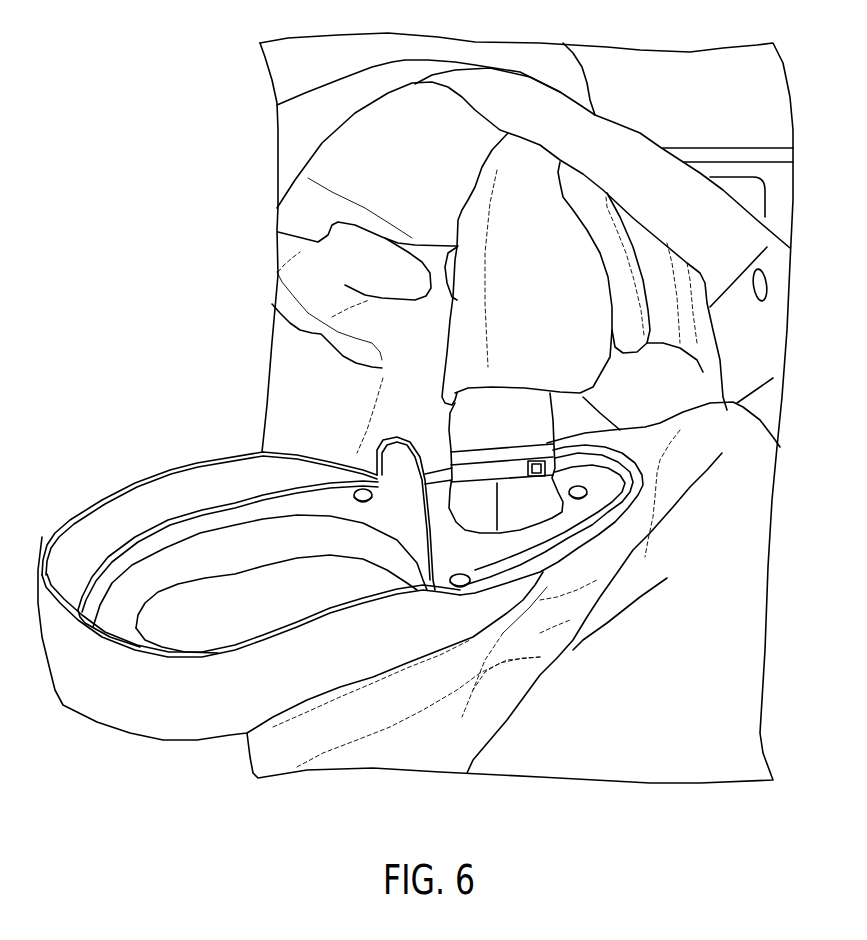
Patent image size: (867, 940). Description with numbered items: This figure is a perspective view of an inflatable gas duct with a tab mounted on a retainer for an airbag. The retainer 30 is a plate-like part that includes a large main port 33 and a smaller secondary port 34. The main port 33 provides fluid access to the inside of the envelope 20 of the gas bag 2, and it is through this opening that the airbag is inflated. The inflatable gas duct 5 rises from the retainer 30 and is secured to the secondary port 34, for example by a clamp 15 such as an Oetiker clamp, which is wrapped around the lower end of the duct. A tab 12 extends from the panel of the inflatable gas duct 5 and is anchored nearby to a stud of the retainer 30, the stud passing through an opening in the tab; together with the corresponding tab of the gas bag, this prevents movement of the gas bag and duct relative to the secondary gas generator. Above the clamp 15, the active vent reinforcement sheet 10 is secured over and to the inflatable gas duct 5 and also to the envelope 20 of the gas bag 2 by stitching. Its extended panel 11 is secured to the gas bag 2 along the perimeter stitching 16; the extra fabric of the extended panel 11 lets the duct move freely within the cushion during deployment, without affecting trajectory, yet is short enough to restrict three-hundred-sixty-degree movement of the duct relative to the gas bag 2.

The gas bag 2 is at (440, 752).
The inflatable gas duct 5 is at (530, 407).
The active vent reinforcement sheet 10 is at (513, 163).
The extended panel 11 is at (578, 208).
The tab 12 is at (595, 603).
The clamp 15 is at (530, 453).
The perimeter stitching 16 is at (608, 193).
The envelope 20 is at (630, 233).
The retainer 30 is at (203, 720).
The main port 33 is at (237, 597).
The secondary port 34 is at (435, 590).